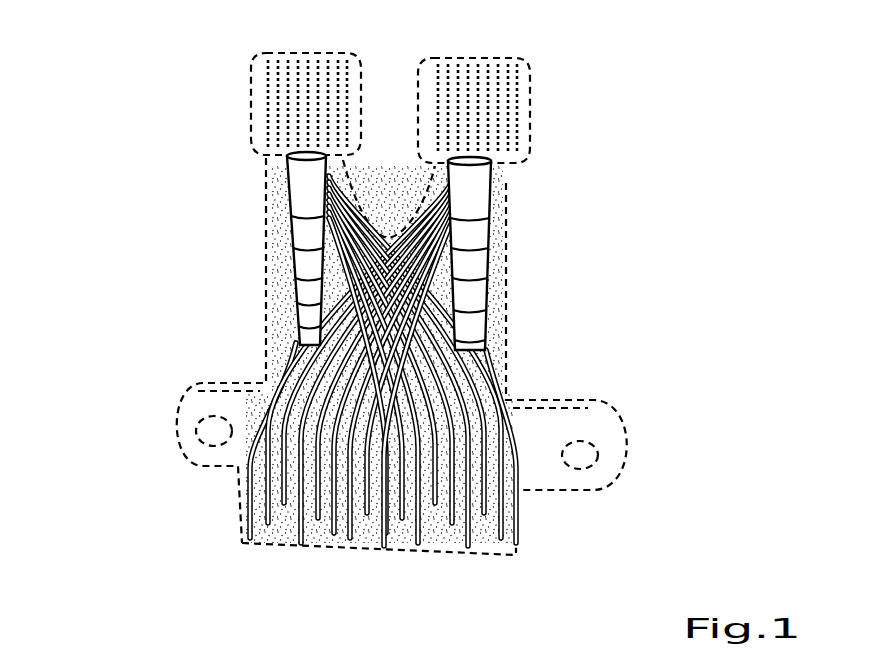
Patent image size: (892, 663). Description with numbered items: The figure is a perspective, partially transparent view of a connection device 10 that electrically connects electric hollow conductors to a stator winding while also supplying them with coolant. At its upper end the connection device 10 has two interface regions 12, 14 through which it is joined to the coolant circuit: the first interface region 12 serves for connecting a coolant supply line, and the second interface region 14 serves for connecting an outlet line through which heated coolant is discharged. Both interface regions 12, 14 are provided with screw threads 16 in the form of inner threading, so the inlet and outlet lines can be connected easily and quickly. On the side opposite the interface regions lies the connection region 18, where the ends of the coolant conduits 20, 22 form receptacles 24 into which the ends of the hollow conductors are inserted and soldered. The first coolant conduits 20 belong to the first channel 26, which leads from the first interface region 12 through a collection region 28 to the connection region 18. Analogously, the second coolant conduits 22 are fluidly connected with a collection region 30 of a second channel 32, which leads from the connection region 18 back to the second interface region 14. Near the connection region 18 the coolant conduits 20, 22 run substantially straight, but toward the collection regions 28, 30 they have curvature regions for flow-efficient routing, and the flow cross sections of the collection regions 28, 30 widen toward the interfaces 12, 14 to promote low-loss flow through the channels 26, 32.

The connection device 10 is at (181, 33).
The first interface region 12 is at (258, 96).
The second interface region 14 is at (517, 103).
The screw threads 16 is at (308, 72).
The connection region 18 is at (497, 548).
The first coolant conduits 20 is at (500, 393).
The second coolant conduits 22 is at (287, 370).
The receptacles 24 is at (253, 537).
The first channel 26 is at (315, 200).
The collection region 28 is at (303, 257).
The collection region 30 is at (473, 264).
The second channel 32 is at (470, 203).